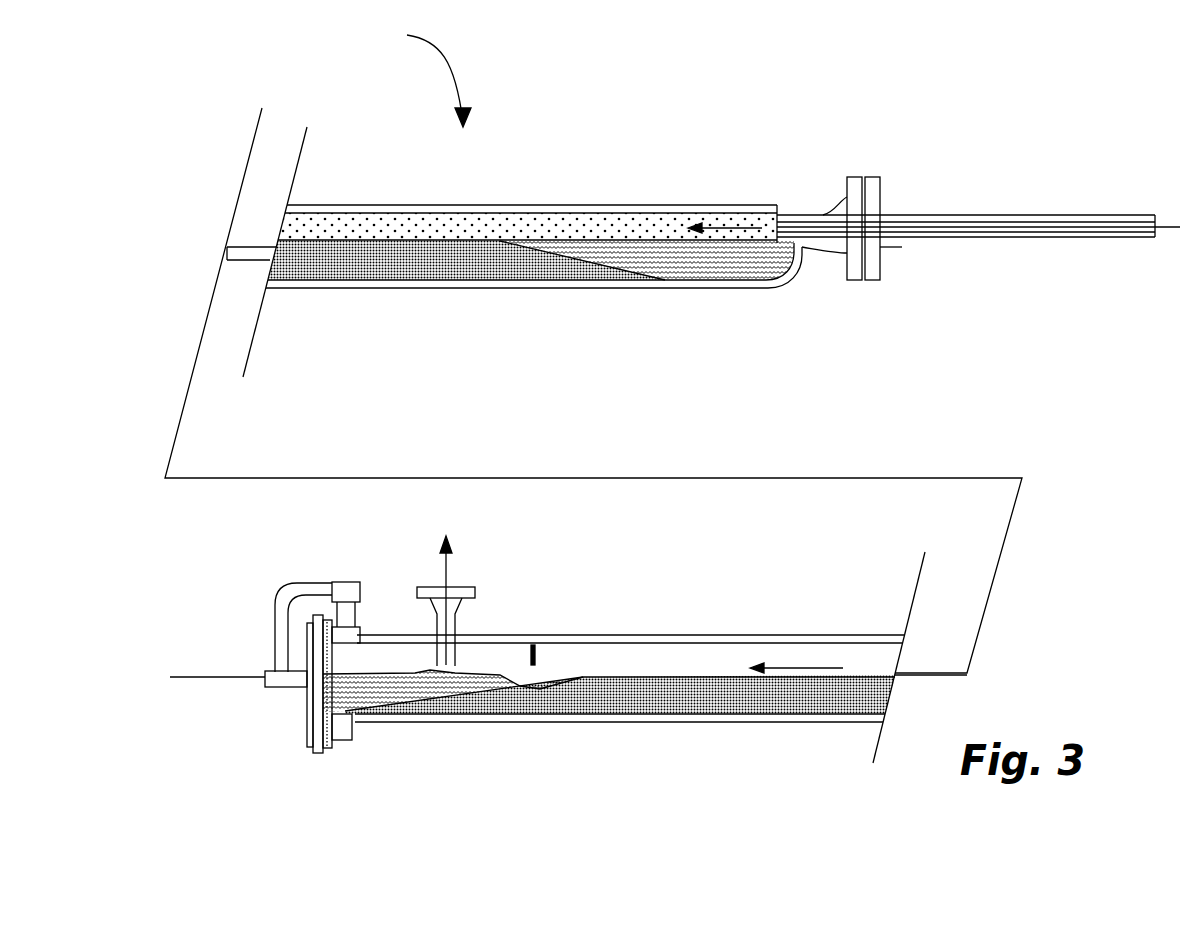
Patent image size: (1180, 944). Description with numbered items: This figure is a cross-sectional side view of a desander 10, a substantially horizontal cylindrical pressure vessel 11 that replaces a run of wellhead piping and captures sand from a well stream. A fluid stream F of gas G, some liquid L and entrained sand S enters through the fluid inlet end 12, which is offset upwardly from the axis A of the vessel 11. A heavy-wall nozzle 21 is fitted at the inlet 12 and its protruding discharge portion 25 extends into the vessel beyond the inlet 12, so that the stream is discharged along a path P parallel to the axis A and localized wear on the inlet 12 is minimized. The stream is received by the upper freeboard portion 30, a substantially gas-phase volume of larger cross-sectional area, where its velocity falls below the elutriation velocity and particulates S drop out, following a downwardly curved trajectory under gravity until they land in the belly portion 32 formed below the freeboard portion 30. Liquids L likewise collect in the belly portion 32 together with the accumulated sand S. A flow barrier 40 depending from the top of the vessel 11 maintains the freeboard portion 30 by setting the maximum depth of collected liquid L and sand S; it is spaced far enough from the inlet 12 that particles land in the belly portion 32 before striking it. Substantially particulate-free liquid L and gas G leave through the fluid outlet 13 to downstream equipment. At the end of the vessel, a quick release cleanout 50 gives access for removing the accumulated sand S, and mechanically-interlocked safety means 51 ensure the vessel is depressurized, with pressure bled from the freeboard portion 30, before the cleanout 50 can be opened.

The desander 10 is at (417, 75).
The pressure vessel 11 is at (533, 205).
The fluid inlet end 12 is at (778, 171).
The fluid outlet 13 is at (423, 587).
The nozzle 21 is at (805, 253).
The protruding discharge portion 25 is at (763, 237).
The freeboard portion 30 is at (293, 227).
The belly portion 32 is at (283, 262).
The flow barrier 40 is at (540, 650).
The cleanout 50 is at (313, 740).
The mechanically-interlocked safety means 51 is at (277, 617).
The axis of the vessel A is at (266, 110).
The sand particulates S is at (578, 233).
The liquid L is at (753, 267).
The discharge path P is at (740, 230).
The fluid stream F is at (1168, 227).
The gas G is at (480, 657).